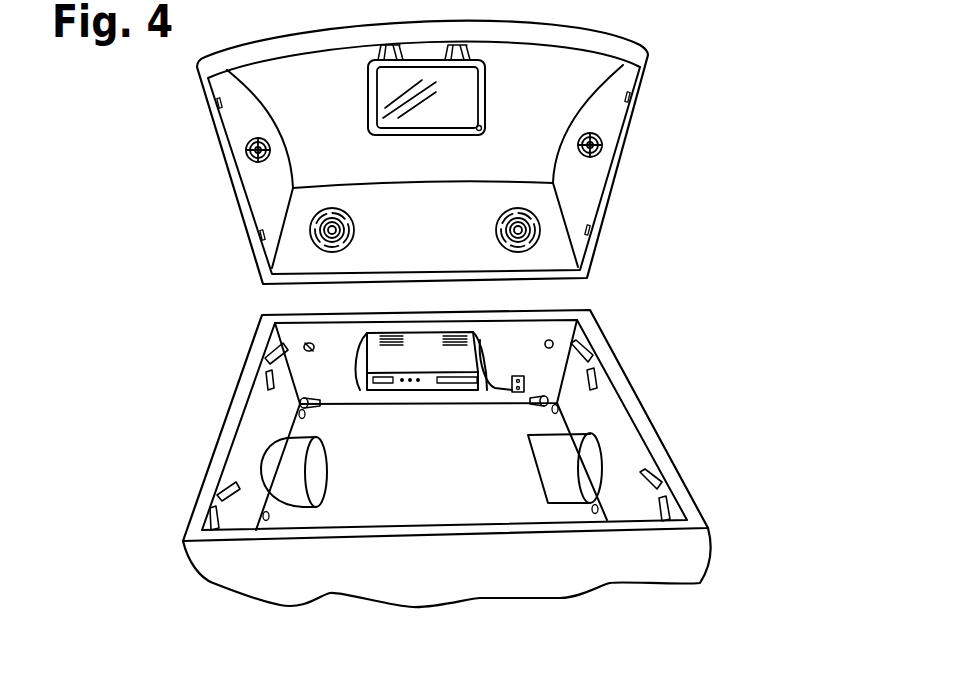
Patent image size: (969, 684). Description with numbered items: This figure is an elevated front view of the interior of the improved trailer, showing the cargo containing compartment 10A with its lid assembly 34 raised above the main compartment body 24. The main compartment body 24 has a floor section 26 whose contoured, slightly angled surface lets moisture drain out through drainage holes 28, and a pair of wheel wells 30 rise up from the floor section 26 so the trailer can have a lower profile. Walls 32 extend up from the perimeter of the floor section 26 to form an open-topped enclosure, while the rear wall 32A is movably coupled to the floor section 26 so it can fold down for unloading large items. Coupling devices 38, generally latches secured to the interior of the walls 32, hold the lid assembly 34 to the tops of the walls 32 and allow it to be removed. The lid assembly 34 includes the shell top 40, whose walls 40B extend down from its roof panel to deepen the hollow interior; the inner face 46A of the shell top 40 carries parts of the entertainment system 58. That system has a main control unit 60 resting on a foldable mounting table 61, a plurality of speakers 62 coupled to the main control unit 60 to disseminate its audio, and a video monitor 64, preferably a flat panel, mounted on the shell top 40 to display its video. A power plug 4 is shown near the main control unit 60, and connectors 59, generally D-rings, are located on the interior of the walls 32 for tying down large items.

The cargo containing compartment 10A is at (741, 181).
The main compartment body 24 is at (211, 443).
The floor section 26 is at (424, 481).
The drainage holes 28 is at (314, 409).
The wheel wells 30 is at (306, 478).
The walls 32 is at (253, 352).
The rear wall 32A is at (470, 588).
The lid assembly 34 is at (662, 102).
The coupling devices 38 is at (579, 352).
The shell top 40 is at (661, 45).
The walls 40B is at (243, 197).
The lid inner face 46A is at (423, 172).
The entertainment system 58 is at (571, 298).
The connectors 59 is at (308, 353).
The main control unit 60 is at (428, 347).
The mounting table 61 is at (486, 388).
The speakers 62 is at (270, 144).
The video monitor 64 is at (487, 83).
The power plug 4 is at (521, 375).